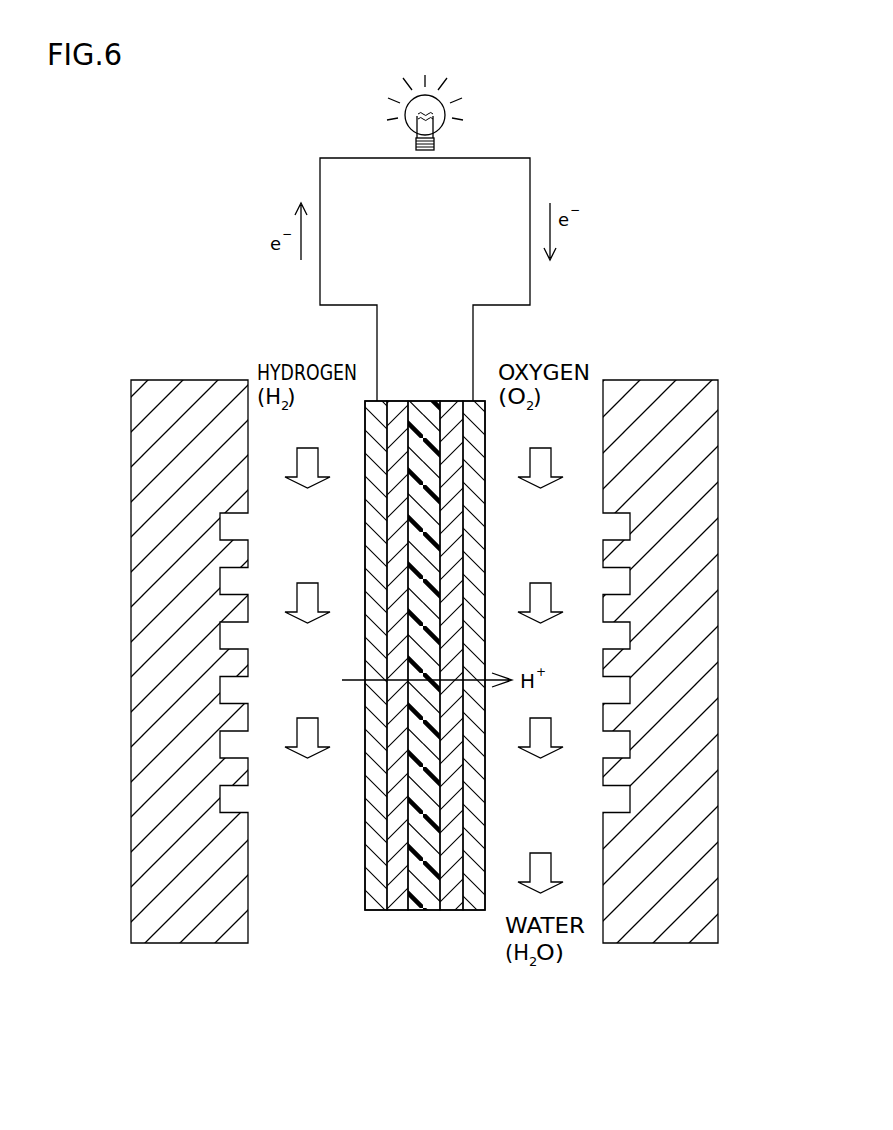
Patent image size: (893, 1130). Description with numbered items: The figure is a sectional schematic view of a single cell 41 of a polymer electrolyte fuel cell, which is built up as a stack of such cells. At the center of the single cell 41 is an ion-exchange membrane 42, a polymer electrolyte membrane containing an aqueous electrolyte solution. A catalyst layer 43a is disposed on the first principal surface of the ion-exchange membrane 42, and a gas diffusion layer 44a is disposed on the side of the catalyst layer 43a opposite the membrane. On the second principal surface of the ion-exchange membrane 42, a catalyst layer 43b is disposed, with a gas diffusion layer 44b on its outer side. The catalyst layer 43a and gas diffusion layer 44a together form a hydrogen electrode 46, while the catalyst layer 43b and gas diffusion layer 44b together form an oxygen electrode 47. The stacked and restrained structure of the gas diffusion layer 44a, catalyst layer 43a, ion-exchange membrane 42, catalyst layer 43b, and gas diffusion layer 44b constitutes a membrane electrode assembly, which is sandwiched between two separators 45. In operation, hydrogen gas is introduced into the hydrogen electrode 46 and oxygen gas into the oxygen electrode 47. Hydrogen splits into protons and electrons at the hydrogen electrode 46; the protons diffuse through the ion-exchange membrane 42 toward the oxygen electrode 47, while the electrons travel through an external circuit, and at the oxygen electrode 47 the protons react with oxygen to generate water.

The single cell 41 is at (708, 338).
The ion-exchange membrane 42 is at (427, 897).
The catalyst layer 43a is at (398, 679).
The catalyst layer 43b is at (455, 897).
The gas diffusion layer 44a is at (375, 897).
The gas diffusion layer 44b is at (484, 694).
The separator 45 is at (160, 636).
The hydrogen electrode 46 is at (332, 719).
The oxygen electrode 47 is at (519, 719).